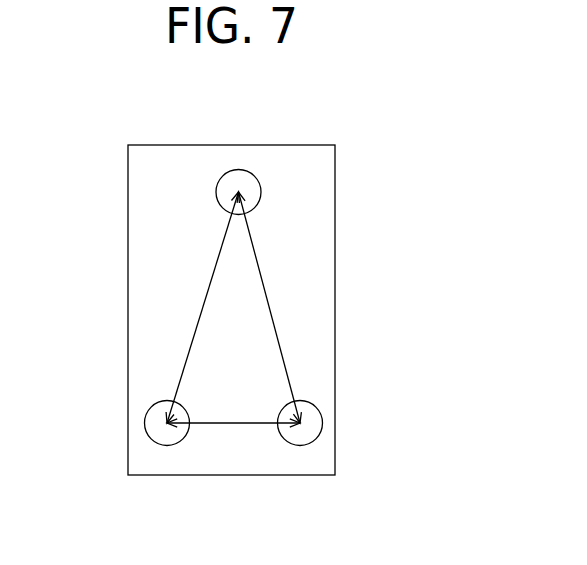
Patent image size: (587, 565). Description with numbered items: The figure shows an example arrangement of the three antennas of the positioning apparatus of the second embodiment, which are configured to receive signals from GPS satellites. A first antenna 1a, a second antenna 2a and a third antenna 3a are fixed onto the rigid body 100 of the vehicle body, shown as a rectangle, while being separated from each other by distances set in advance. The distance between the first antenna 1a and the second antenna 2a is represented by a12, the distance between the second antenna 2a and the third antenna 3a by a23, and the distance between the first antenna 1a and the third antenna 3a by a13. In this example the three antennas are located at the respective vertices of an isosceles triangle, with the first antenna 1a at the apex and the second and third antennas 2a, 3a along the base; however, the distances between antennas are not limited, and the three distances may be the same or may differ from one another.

The rigid body 100 is at (180, 145).
The first antenna 1a is at (248, 172).
The second antenna 2a is at (325, 420).
The third antenna 3a is at (148, 410).
The distance between the first antenna and the second antenna a12 is at (260, 258).
The distance between the first antenna and the third antenna a13 is at (215, 282).
The distance between the second antenna and the third antenna a23 is at (237, 425).